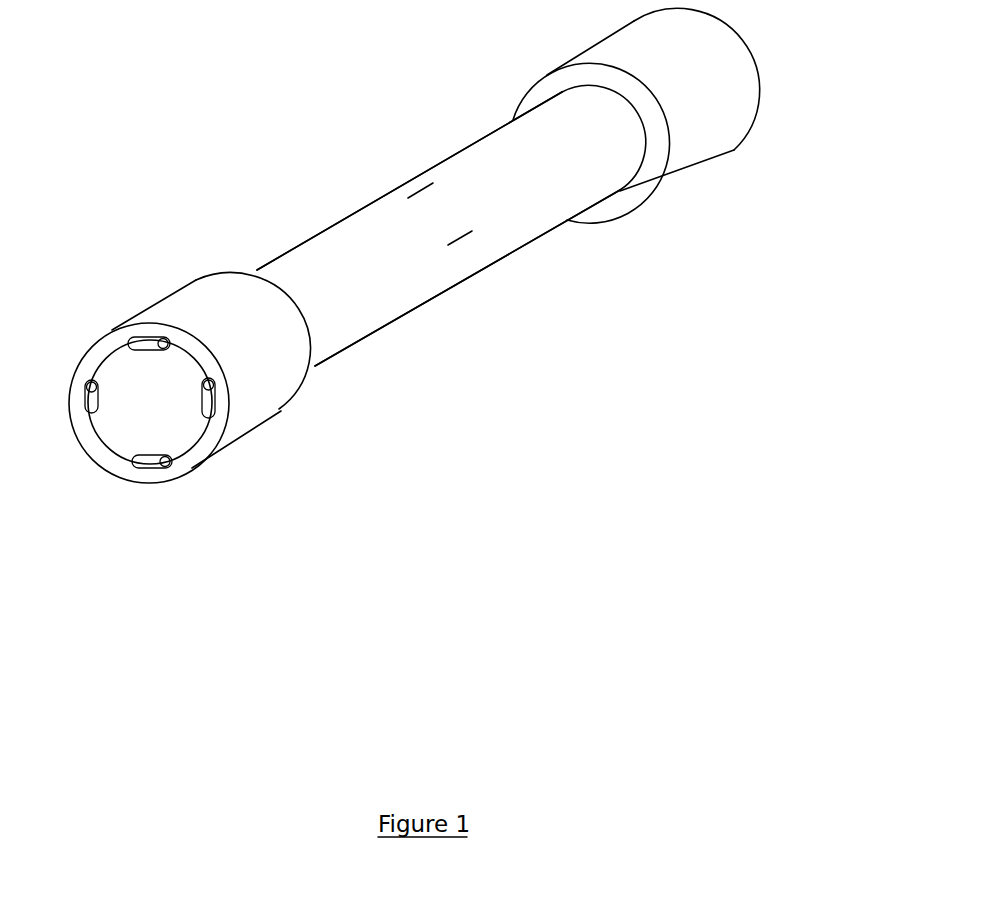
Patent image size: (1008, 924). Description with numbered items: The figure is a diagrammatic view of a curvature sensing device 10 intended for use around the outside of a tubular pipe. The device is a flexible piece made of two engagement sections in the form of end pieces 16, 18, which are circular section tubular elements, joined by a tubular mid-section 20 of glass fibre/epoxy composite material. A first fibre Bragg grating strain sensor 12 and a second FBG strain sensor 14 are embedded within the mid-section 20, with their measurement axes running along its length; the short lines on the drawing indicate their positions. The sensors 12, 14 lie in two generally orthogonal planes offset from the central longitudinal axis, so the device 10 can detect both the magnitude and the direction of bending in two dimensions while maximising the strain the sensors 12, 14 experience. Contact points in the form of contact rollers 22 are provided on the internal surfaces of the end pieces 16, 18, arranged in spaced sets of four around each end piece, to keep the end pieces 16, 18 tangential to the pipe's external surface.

The curvature sensing device 10 is at (407, 271).
The first fibre Bragg grating strain sensor 12 is at (411, 176).
The second fibre Bragg grating strain sensor 14 is at (472, 256).
The end piece 16 is at (252, 415).
The end piece 18 is at (708, 138).
The tubular mid-section 20 is at (343, 258).
The contact rollers 22 is at (92, 408).